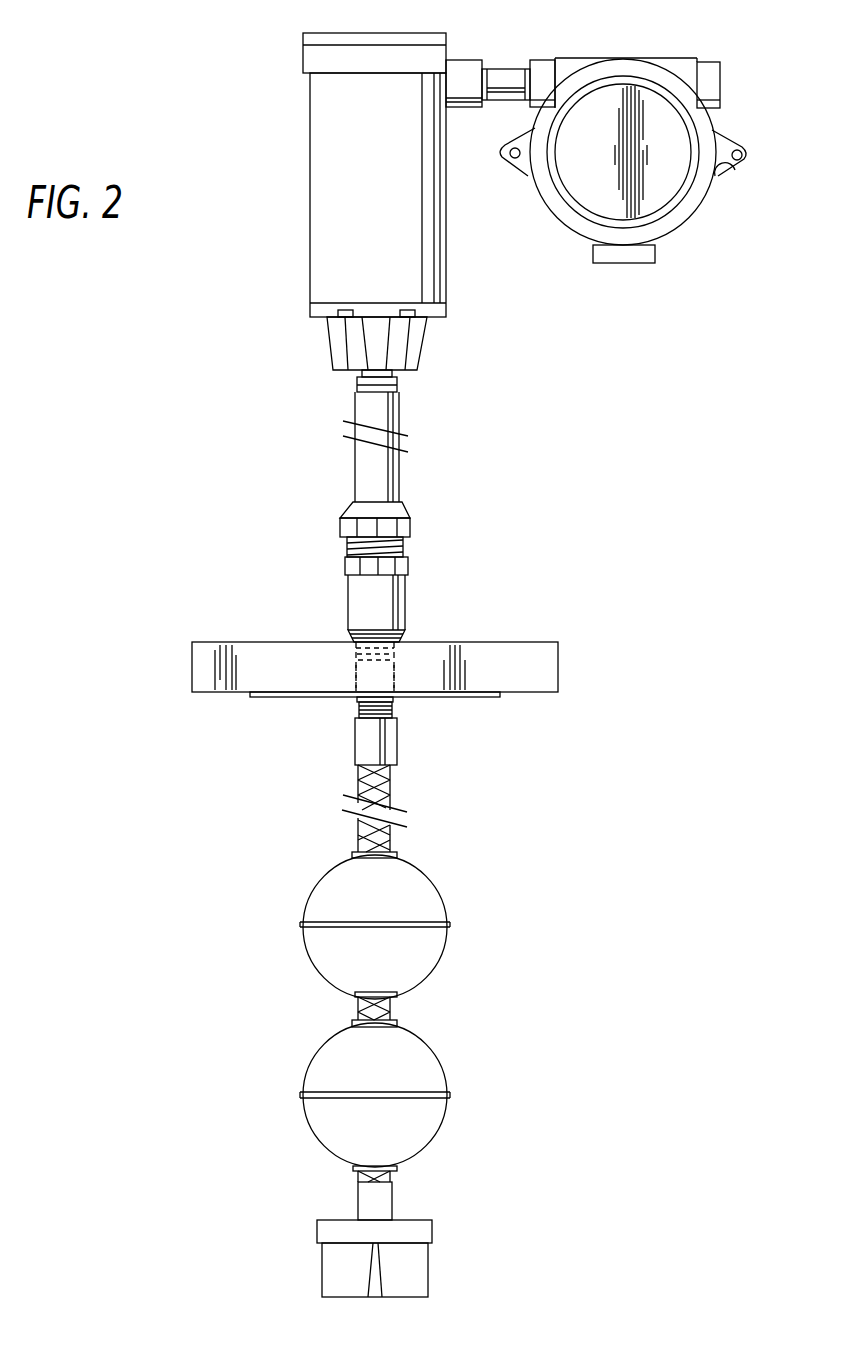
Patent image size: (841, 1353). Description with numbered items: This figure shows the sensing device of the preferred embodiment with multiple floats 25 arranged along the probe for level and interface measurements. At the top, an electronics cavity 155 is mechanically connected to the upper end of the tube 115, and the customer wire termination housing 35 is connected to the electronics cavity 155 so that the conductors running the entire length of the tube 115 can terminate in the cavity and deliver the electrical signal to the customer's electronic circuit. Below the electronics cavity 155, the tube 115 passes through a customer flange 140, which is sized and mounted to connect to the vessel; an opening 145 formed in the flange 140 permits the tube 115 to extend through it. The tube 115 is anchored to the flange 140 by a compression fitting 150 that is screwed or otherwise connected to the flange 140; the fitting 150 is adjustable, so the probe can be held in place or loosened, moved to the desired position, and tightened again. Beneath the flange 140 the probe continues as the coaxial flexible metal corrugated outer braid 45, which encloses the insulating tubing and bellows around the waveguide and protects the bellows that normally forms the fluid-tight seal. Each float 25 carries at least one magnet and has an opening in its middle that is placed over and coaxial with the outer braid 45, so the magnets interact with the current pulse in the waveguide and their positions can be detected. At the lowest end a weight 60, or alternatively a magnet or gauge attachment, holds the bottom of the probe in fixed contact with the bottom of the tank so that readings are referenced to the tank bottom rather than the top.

The customer wire termination housing 35 is at (707, 60).
The electronics cavity 155 is at (346, 160).
The tube 115 is at (355, 478).
The compression fitting 150 is at (345, 565).
The opening 145 is at (344, 635).
The customer flange 140 is at (523, 642).
The flexible metal corrugated outer braid 45 is at (392, 787).
The float 25 is at (391, 904).
The weight 60 is at (414, 1231).